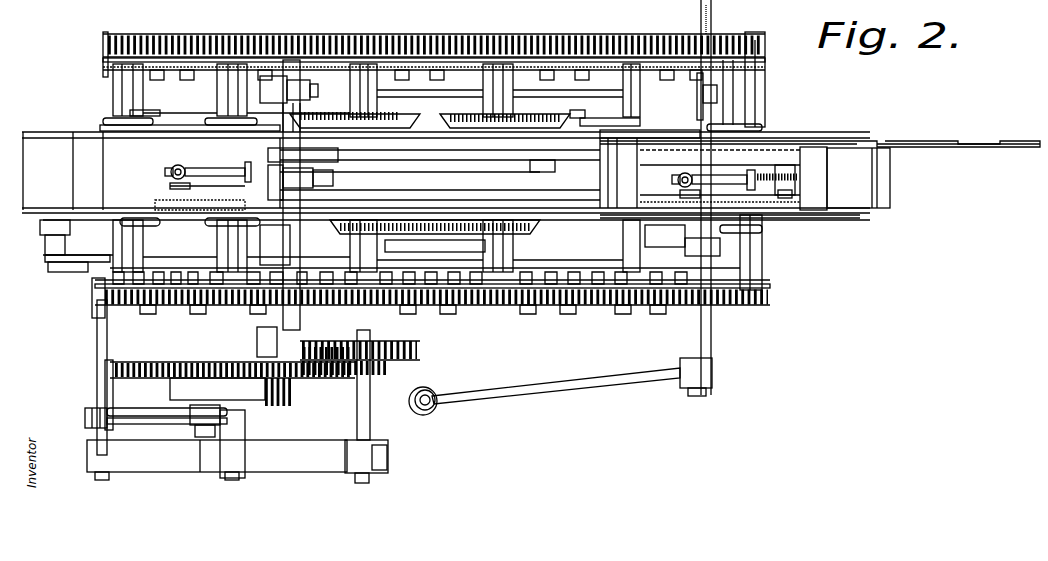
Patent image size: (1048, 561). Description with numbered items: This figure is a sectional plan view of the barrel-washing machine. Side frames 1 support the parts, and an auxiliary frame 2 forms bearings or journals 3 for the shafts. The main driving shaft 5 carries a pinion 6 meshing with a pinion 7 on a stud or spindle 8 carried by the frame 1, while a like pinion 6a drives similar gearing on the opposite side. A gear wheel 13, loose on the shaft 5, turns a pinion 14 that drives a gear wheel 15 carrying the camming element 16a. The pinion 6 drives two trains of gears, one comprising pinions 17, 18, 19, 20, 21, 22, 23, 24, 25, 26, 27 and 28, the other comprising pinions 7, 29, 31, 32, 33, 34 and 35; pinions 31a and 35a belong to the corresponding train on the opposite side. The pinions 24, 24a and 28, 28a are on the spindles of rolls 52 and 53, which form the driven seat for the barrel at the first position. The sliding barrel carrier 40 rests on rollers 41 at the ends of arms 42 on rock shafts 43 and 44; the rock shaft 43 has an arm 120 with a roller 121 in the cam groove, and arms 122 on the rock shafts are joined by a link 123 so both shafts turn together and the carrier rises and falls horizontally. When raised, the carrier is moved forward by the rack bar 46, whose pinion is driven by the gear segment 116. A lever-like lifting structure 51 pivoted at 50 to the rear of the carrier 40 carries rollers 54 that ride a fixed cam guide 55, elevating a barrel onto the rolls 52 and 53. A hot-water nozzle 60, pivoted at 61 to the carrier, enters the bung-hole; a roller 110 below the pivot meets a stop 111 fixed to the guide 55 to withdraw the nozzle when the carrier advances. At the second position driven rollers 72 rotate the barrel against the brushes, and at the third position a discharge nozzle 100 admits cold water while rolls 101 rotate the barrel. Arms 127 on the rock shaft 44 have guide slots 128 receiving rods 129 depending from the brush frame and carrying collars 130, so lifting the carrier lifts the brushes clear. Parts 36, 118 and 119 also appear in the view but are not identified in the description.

The side frame 1 is at (765, 68).
The auxiliary frame 2 is at (282, 470).
The bearings or journals 3 is at (360, 458).
The main driving shaft 5 is at (357, 423).
The pinion 6 is at (360, 322).
The pinion 6a is at (365, 35).
The pinion 7 is at (344, 325).
The stud or spindle 8 is at (377, 260).
The gear wheel 13 is at (395, 363).
The pinion 14 is at (293, 390).
The gear wheel 15 is at (128, 345).
The camming element 16a is at (300, 372).
The pinion 17 is at (405, 315).
The pinion 18 is at (430, 312).
The pinion 19 is at (500, 313).
The pinion 20 is at (535, 313).
The pinion 21 is at (560, 331).
The pinion 22 is at (575, 312).
The pinion 23 is at (600, 313).
The pinion 24 is at (637, 312).
The pinion 24a is at (605, 50).
The pinion 25 is at (665, 315).
The pinion 26 is at (713, 338).
The pinion 27 is at (712, 322).
The pinion 28 is at (762, 305).
The pinion 28a is at (740, 40).
The pinion 29 is at (255, 342).
The pinion 31 is at (213, 345).
The pinion 31a is at (230, 60).
The pinion 32 is at (215, 308).
The pinion 33 is at (173, 345).
The pinion 34 is at (165, 308).
The pinion 35 is at (97, 330).
The pinion 35a is at (125, 35).
The gear 36 is at (270, 308).
The barrel carrier 40 is at (268, 150).
The rollers 41 is at (165, 153).
The arms 42 is at (160, 115).
The rock shaft 43 is at (300, 255).
The rock shaft 44 is at (690, 262).
The arm or bar (rack) 46 is at (75, 265).
The pivot 50 is at (730, 179).
The lever-like structure 51 is at (950, 185).
The rolls 52 is at (762, 126).
The rolls 53 is at (720, 176).
The rollers 54 is at (650, 169).
The fixed cam guide 55 is at (695, 184).
The nozzle 60 is at (754, 174).
The pivotal mounting 61 is at (800, 180).
The driven rollers 72 is at (430, 176).
The discharge nozzle 100 is at (180, 164).
The rolls 101 is at (120, 112).
The roller 110 is at (813, 178).
The stop 111 is at (555, 183).
The gear segment 116 is at (130, 405).
The knob 118 is at (85, 420).
The gear 119 is at (105, 365).
The arm 120 is at (318, 333).
The roller 121 is at (252, 421).
The arms 122 is at (280, 78).
The link 123 is at (440, 100).
The arms 127 is at (605, 385).
The guide slots 128 is at (432, 390).
The rods or arms 129 is at (435, 405).
The collars 130 is at (415, 412).